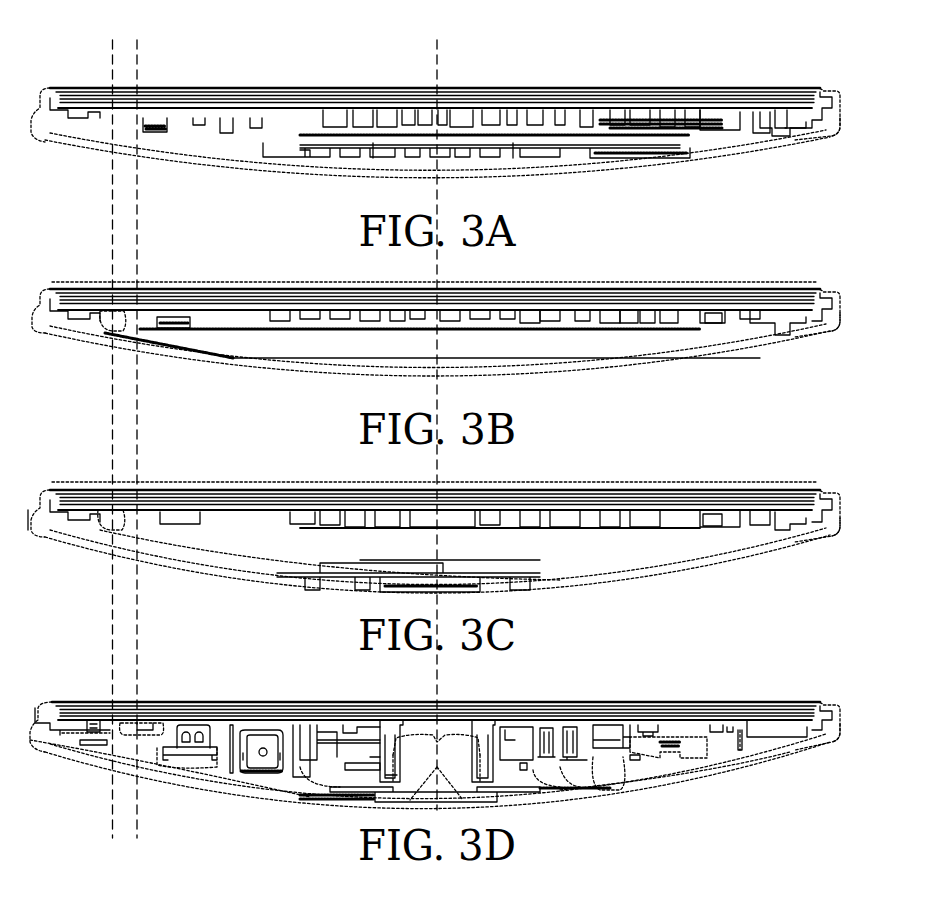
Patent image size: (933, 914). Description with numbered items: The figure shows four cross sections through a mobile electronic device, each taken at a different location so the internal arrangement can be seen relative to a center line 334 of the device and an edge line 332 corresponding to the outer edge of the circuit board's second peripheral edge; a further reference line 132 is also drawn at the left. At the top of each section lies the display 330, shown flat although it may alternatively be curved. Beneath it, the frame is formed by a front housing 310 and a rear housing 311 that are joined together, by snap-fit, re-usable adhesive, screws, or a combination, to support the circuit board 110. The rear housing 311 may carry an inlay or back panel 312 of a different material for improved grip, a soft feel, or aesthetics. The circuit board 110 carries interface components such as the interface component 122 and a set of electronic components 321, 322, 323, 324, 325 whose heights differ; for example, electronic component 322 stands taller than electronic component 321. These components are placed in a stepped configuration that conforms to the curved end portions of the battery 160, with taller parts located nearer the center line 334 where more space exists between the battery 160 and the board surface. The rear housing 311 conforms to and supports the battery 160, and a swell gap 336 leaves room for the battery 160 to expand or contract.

In FIG. 3A, the circuit board 110 is at (712, 112).
In FIG. 3B, the circuit board 110 is at (680, 318).
In FIG. 3C, the circuit board 110 is at (665, 510).
In FIG. 3D, the circuit board 110 is at (738, 720).
In FIG. 3D, the interface component 122 is at (184, 768).
In FIG. 3A, the first boundary line 132 is at (110, 188).
In FIG. 3B, the battery 160 is at (718, 319).
In FIG. 3C, the battery 160 is at (710, 525).
In FIG. 3A, the front housing 310 is at (838, 90).
In FIG. 3B, the front housing 310 is at (838, 285).
In FIG. 3C, the front housing 310 is at (838, 487).
In FIG. 3D, the front housing 310 is at (838, 697).
In FIG. 3A, the rear housing 311 is at (838, 134).
In FIG. 3B, the rear housing 311 is at (838, 331).
In FIG. 3C, the rear housing 311 is at (838, 537).
In FIG. 3D, the rear housing 311 is at (838, 745).
In FIG. 3A, the back panel 312 is at (800, 155).
In FIG. 3B, the back panel 312 is at (783, 351).
In FIG. 3C, the back panel 312 is at (785, 558).
In FIG. 3D, the back panel 312 is at (783, 766).
In FIG. 3B, the electronic component 321 is at (172, 317).
In FIG. 3C, the electronic component 321 is at (178, 520).
In FIG. 3B, the electronic component 322 is at (283, 316).
In FIG. 3C, the electronic component 322 is at (301, 520).
In FIG. 3B, the electronic component 323 is at (527, 320).
In FIG. 3B, the electronic component 324 is at (628, 320).
In FIG. 3B, the electronic component 325 is at (667, 320).
In FIG. 3A, the display 330 is at (283, 75).
In FIG. 3B, the display 330 is at (315, 272).
In FIG. 3C, the display 330 is at (315, 471).
In FIG. 3D, the display 330 is at (315, 690).
In FIG. 3A, the edge line 332 is at (140, 206).
In FIG. 3A, the center line 334 is at (440, 192).
In FIG. 3B, the swell gap 336 is at (426, 340).